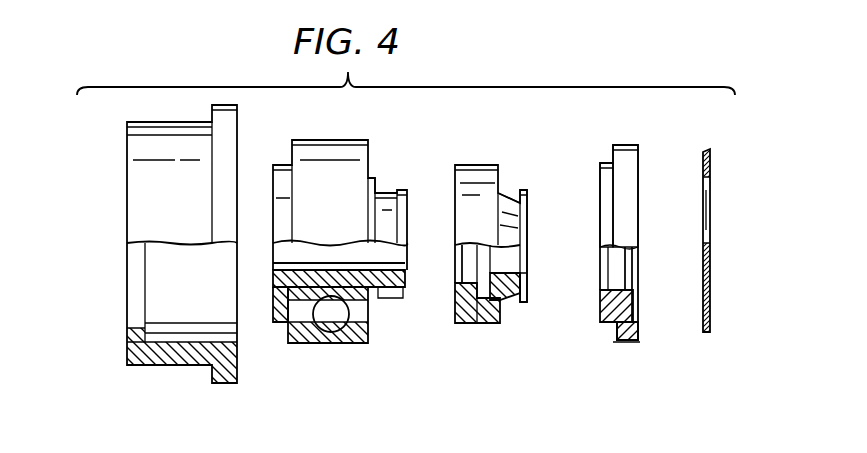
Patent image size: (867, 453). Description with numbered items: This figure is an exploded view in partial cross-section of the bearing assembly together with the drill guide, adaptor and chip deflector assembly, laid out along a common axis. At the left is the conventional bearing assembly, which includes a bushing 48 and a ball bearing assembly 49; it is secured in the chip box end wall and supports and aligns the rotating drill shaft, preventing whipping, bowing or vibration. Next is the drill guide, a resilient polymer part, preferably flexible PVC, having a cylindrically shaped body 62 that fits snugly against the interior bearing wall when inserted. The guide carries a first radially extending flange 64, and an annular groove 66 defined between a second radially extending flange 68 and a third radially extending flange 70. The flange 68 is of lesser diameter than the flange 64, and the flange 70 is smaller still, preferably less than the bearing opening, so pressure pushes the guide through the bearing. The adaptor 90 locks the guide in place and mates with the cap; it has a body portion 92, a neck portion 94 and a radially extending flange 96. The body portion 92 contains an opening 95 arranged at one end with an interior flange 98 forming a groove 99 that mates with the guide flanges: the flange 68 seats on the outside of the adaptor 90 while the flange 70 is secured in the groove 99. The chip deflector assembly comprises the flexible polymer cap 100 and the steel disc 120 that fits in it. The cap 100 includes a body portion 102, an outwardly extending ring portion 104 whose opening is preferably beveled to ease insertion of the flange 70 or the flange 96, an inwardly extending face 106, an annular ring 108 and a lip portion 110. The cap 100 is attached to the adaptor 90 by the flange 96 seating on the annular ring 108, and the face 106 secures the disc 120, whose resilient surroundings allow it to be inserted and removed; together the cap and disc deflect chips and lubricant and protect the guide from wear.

The bushing 48 is at (145, 193).
The ball bearing assembly 49 is at (323, 152).
The cylindrically shaped body 62 is at (345, 343).
The first radially extending flange 64 is at (285, 320).
The annular groove 66 is at (385, 192).
The second radially extending flange 68 is at (372, 178).
The third radially extending flange 70 is at (403, 300).
The adaptor 90 is at (496, 135).
The body portion 92 is at (473, 325).
The neck portion 94 is at (500, 198).
The opening 95 is at (462, 253).
The radially extending flange 96 is at (527, 188).
The interior flange 98 is at (455, 325).
The groove 99 is at (480, 302).
The cap 100 is at (630, 356).
The body portion 102 is at (628, 145).
The outwardly extending ring portion 104 is at (603, 163).
The inwardly extending face 106 is at (633, 312).
The annular ring 108 is at (627, 300).
The lip portion 110 is at (638, 343).
The steel disc 120 is at (706, 152).